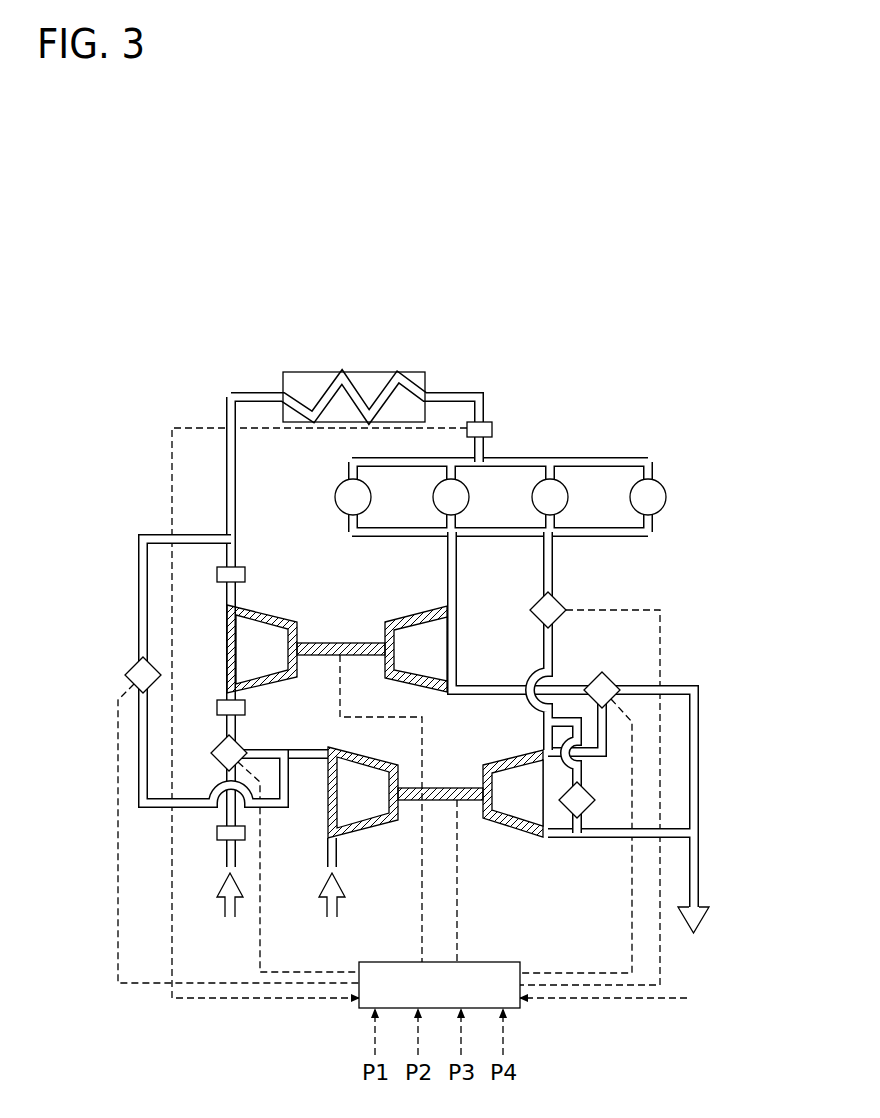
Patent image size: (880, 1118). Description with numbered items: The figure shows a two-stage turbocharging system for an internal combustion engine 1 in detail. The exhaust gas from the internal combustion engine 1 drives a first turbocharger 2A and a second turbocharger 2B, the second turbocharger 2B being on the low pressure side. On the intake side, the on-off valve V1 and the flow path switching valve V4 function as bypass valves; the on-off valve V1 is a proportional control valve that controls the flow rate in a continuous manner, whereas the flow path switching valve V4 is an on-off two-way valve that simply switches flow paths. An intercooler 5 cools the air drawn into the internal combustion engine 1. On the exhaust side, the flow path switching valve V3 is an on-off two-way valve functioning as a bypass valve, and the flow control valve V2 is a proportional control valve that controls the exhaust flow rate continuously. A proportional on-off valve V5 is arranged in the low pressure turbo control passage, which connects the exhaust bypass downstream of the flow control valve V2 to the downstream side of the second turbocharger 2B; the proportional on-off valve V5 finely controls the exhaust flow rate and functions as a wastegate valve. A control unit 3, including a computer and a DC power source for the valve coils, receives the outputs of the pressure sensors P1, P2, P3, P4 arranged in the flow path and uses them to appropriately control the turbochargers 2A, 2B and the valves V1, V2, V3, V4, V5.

The internal combustion engine 1 is at (655, 462).
The first turbocharger 2A is at (350, 643).
The second turbocharger 2B is at (472, 802).
The control unit 3 is at (359, 1008).
The intercooler 5 is at (372, 372).
The pressure sensor P1 is at (213, 835).
The pressure sensor P2 is at (213, 710).
The pressure sensor P3 is at (213, 577).
The pressure sensor P4 is at (498, 431).
The on-off valve V1 is at (131, 663).
The flow control valve V2 is at (561, 599).
The flow path switching valve V3 is at (605, 673).
The flow path switching valve V4 is at (246, 748).
The proportional on-off valve V5 is at (575, 819).